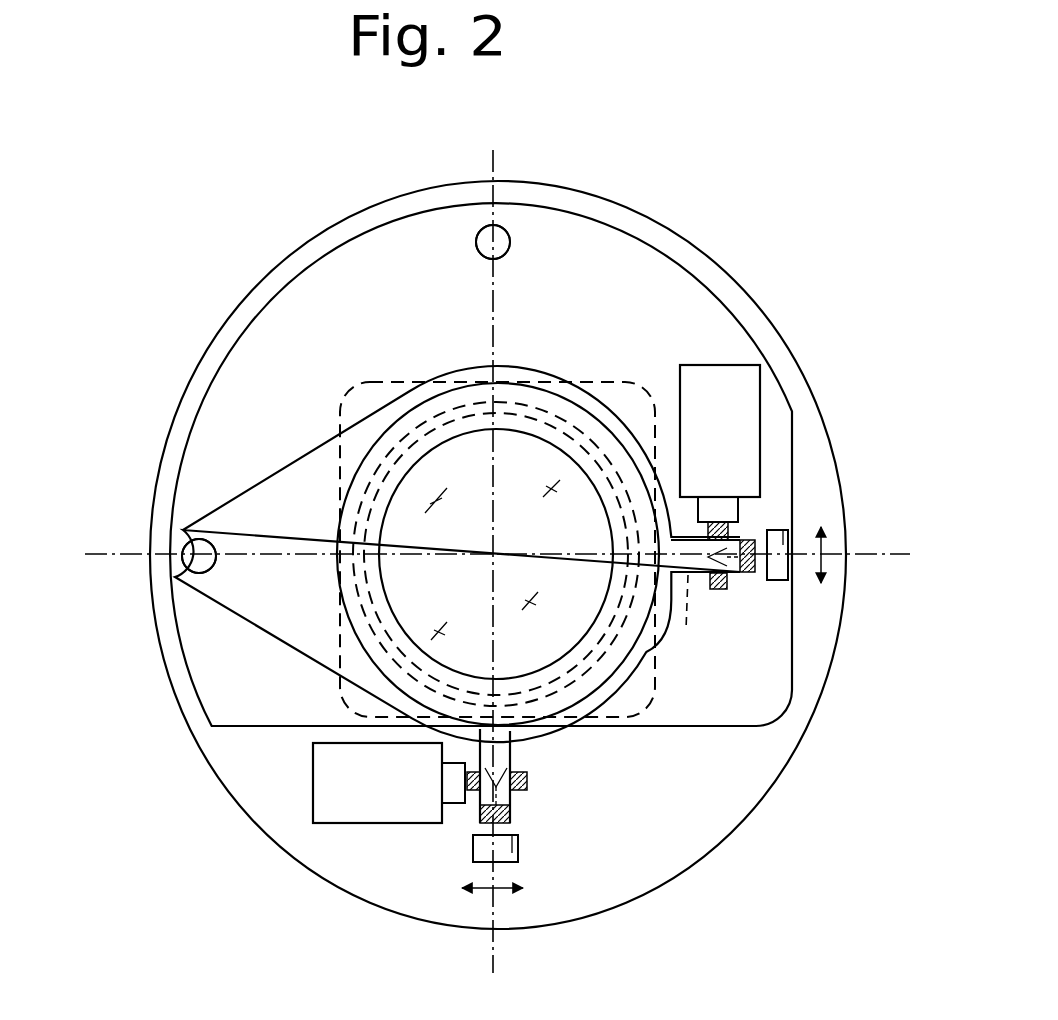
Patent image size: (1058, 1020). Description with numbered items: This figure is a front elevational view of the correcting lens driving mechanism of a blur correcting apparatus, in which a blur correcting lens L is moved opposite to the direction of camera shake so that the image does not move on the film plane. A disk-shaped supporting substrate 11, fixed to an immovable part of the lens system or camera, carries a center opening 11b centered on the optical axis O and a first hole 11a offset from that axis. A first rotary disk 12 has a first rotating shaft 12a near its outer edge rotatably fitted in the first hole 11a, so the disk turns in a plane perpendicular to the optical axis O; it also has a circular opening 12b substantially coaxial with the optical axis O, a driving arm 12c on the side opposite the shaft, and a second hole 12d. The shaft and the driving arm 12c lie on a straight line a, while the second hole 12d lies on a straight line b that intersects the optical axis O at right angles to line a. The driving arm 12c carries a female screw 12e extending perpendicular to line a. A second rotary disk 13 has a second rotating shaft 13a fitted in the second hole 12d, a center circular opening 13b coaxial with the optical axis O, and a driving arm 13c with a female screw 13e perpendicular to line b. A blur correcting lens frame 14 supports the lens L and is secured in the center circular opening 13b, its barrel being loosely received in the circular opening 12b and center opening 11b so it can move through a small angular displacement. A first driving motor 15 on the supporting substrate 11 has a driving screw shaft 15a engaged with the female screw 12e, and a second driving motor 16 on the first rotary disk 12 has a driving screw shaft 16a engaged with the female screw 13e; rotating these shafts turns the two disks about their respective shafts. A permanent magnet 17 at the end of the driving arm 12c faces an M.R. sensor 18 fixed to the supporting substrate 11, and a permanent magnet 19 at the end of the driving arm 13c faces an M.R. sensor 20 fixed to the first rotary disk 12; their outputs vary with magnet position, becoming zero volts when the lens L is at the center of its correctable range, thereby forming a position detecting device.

The supporting substrate 11 is at (817, 437).
The first hole 11a is at (564, 197).
The center opening 11b is at (358, 380).
The first rotary disk 12 is at (735, 705).
The first rotating shaft 12a is at (510, 230).
The circular opening 12b is at (452, 403).
The driving arm 12c is at (507, 800).
The second hole 12d is at (128, 611).
The female screw 12e is at (515, 757).
The second rotary disk 13 is at (230, 513).
The second rotating shaft 13a is at (173, 582).
The center circular opening 13b is at (380, 528).
The driving arm 13c is at (740, 575).
The female screw 13e is at (686, 620).
The blur correcting lens frame 14 is at (573, 432).
The first driving motor 15 is at (377, 823).
The driving screw shaft 15a is at (527, 782).
The second driving motor 16 is at (757, 370).
The driving screw shaft 16a is at (718, 590).
The permanent magnet 17 is at (480, 812).
The M.R. sensor 18 is at (518, 855).
The permanent magnet 19 is at (757, 538).
The M.R. sensor 20 is at (790, 532).
The optical axis O is at (497, 553).
The blur correcting lens L is at (405, 620).
The straight line a is at (497, 353).
The straight line b is at (450, 560).